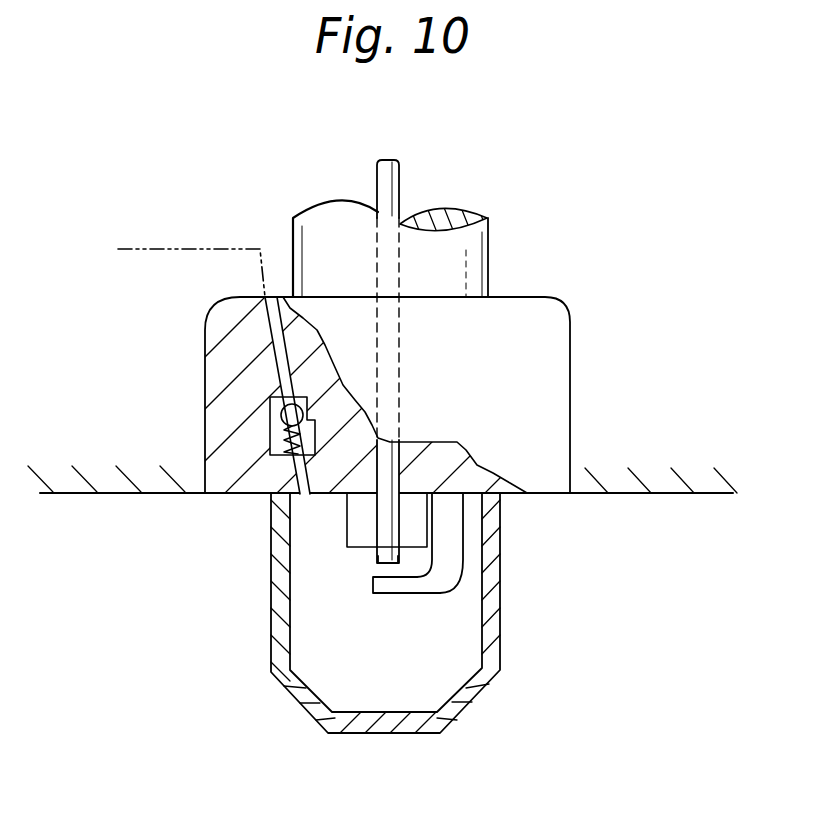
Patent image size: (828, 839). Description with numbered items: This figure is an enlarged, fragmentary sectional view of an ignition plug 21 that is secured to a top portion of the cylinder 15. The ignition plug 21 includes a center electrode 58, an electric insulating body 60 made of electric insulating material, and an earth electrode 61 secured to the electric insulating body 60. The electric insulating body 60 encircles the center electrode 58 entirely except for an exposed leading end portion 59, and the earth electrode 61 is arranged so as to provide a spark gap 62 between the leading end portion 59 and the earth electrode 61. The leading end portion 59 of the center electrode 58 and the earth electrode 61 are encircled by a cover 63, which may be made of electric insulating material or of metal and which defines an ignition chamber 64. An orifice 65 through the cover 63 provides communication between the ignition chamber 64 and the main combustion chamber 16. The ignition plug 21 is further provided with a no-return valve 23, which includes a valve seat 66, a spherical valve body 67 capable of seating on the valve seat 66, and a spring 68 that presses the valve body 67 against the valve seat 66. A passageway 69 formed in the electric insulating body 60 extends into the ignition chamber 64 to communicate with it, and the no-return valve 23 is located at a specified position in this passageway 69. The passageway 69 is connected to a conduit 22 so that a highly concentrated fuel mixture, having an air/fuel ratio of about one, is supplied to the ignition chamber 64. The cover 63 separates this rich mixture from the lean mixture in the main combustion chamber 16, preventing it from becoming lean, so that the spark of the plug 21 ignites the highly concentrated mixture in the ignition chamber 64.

The cylinder 15 is at (666, 486).
The main combustion chamber 16 is at (600, 667).
The ignition plug 21 is at (555, 400).
The conduit 22 is at (190, 248).
The no-return valve 23 is at (147, 327).
The center electrode 58 is at (382, 527).
The leading end portion 59 is at (373, 557).
The electric insulating body 60 is at (360, 512).
The earth electrode 61 is at (465, 524).
The spark gap 62 is at (370, 578).
The cover 63 is at (492, 622).
The ignition chamber 64 is at (393, 700).
The orifice 65 is at (300, 700).
The valve seat 66 is at (293, 408).
The spherical valve body 67 is at (280, 410).
The spring 68 is at (272, 455).
The passageway 69 is at (277, 333).